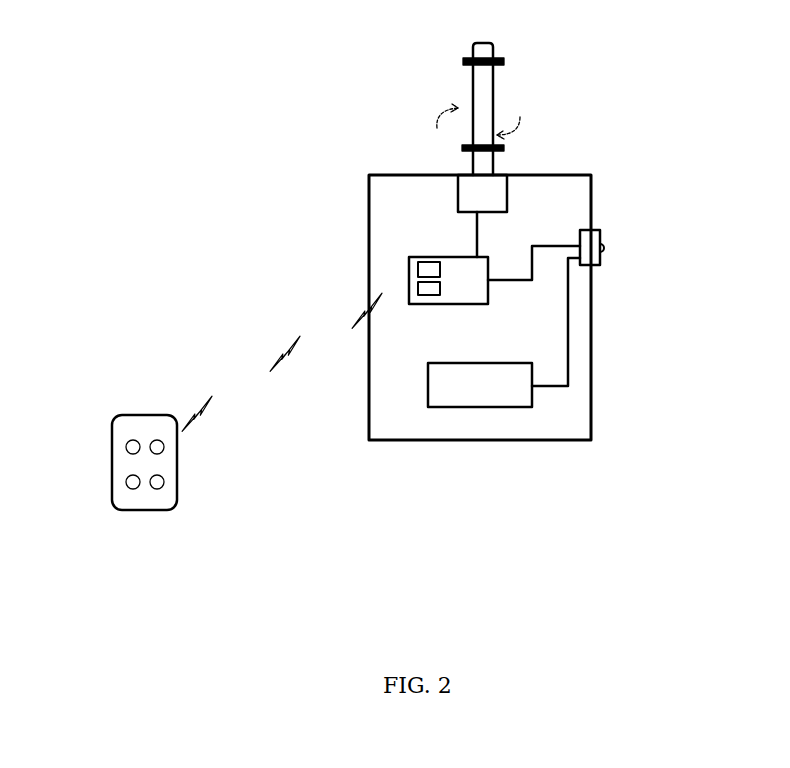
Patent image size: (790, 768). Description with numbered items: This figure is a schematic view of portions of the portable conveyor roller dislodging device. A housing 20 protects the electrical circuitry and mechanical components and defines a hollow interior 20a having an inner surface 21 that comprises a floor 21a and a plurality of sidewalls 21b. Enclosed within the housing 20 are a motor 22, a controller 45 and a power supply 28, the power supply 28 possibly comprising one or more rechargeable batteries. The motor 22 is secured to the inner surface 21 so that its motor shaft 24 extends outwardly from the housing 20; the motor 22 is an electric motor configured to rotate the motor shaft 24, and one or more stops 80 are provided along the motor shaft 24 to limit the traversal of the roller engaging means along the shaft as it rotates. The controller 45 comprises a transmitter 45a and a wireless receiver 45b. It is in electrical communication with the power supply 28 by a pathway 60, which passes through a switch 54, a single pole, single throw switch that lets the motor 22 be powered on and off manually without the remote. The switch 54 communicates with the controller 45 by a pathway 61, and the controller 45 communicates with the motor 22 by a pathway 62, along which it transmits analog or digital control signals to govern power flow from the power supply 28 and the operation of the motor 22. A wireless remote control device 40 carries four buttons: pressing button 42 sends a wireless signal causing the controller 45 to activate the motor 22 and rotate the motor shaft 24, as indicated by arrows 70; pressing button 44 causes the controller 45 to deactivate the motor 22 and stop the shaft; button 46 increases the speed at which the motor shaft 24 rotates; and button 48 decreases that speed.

The housing 20 is at (453, 307).
The hollow interior 20a is at (385, 405).
The inner surface 21 is at (548, 437).
The floor 21a is at (480, 344).
The sidewalls 21b is at (381, 185).
The motor 22 is at (508, 190).
The motor shaft 24 is at (504, 148).
The power supply 28 is at (533, 397).
The wireless remote control device 40 is at (135, 497).
The button 42 is at (165, 443).
The button 44 is at (126, 447).
The controller 45 is at (394, 354).
The transmitter 45a is at (428, 262).
The wireless receiver 45b is at (432, 296).
The button 46 is at (163, 485).
The button 48 is at (128, 488).
The switch 54 is at (600, 232).
The pathway 60 is at (568, 327).
The pathway 61 is at (553, 245).
The pathway 62 is at (478, 238).
The arrows 70 is at (443, 113).
The stops 80 is at (503, 62).